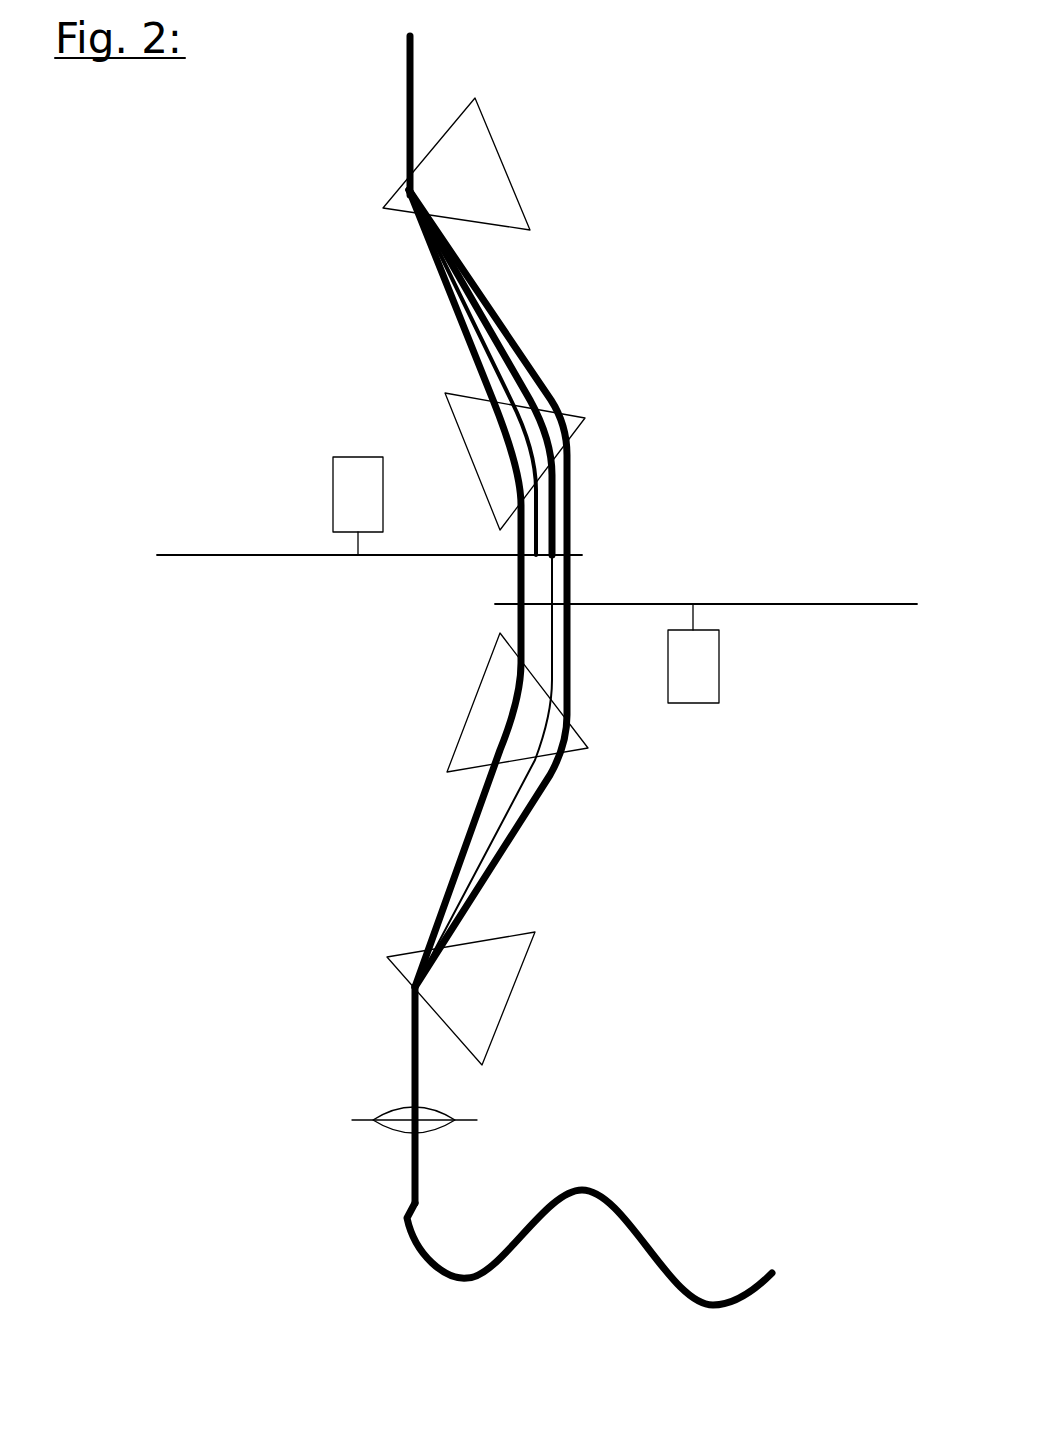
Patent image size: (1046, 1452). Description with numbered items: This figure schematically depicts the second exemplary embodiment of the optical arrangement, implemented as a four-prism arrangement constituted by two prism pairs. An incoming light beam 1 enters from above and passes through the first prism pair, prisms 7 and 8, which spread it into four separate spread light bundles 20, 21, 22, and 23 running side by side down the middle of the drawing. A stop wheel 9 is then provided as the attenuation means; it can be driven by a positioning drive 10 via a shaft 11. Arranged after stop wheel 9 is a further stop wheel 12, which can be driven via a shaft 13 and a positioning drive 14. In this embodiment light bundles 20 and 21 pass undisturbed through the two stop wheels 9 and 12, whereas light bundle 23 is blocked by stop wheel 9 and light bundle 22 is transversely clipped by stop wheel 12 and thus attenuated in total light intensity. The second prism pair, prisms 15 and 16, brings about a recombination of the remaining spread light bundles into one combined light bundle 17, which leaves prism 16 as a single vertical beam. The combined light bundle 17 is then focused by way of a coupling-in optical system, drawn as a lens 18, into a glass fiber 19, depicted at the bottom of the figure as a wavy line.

The input light beam 1 is at (410, 78).
The prism 7 is at (478, 183).
The prism 8 is at (572, 413).
The stop wheel 9 is at (207, 555).
The positioning drive 10 is at (343, 480).
The shaft 11 is at (357, 543).
The stop wheel 12 is at (843, 603).
The shaft 13 is at (693, 613).
The positioning drive 14 is at (707, 675).
The prism 15 is at (468, 727).
The prism 16 is at (483, 972).
The combined light bundle 17 is at (412, 1058).
The focusing lens 18 is at (437, 1120).
The glass fiber 19 is at (613, 1198).
The light bundle 20 is at (520, 508).
The light bundle 21 is at (525, 542).
The light bundle 22 is at (542, 490).
The light bundle 23 is at (538, 515).